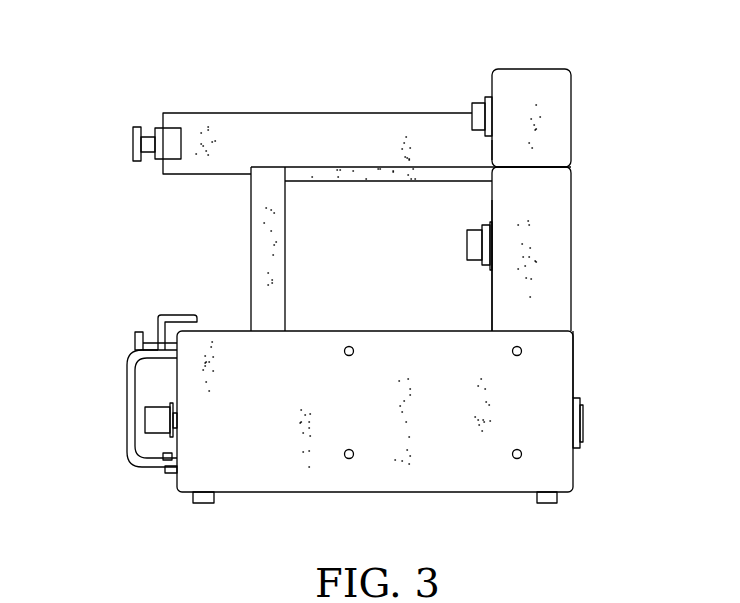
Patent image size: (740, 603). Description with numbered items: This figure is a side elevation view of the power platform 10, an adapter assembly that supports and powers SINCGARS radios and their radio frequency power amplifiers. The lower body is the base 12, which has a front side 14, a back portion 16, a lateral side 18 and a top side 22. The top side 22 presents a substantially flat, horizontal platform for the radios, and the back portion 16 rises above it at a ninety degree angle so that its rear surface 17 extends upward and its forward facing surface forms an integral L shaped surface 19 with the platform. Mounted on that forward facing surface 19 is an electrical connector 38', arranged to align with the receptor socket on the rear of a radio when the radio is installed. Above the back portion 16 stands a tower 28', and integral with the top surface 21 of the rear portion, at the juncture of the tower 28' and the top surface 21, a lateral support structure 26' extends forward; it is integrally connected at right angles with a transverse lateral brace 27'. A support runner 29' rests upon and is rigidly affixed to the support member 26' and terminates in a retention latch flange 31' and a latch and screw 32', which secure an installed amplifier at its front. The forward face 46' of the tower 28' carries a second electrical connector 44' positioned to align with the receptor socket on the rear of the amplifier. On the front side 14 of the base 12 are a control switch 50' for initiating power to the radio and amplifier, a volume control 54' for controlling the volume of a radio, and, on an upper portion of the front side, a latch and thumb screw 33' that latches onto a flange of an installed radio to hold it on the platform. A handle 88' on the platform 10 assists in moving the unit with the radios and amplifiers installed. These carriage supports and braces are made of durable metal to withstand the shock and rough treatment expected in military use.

The power platform 10 is at (378, 294).
The base 12 is at (574, 473).
The front side 14 is at (177, 478).
The back portion 16 is at (572, 351).
The rear surface 17 is at (572, 282).
The lateral side 18 is at (442, 435).
The L shaped surface 19 is at (492, 296).
The top surface 21 is at (548, 165).
The top side 22 is at (333, 332).
The lateral support structure 26' is at (371, 124).
The lateral brace 27' is at (268, 199).
The tower 28' is at (570, 108).
The support runner 29' is at (317, 120).
The retention latch flange 31' is at (154, 114).
The latch and screw 32' is at (104, 145).
The latch and thumb screw 33' is at (125, 334).
The electrical connector 38' is at (450, 246).
The second electrical connector 44' is at (478, 86).
The forward face 46' is at (453, 113).
The control switch 50' is at (121, 475).
The volume control 54' is at (112, 420).
The handle 88' is at (112, 408).